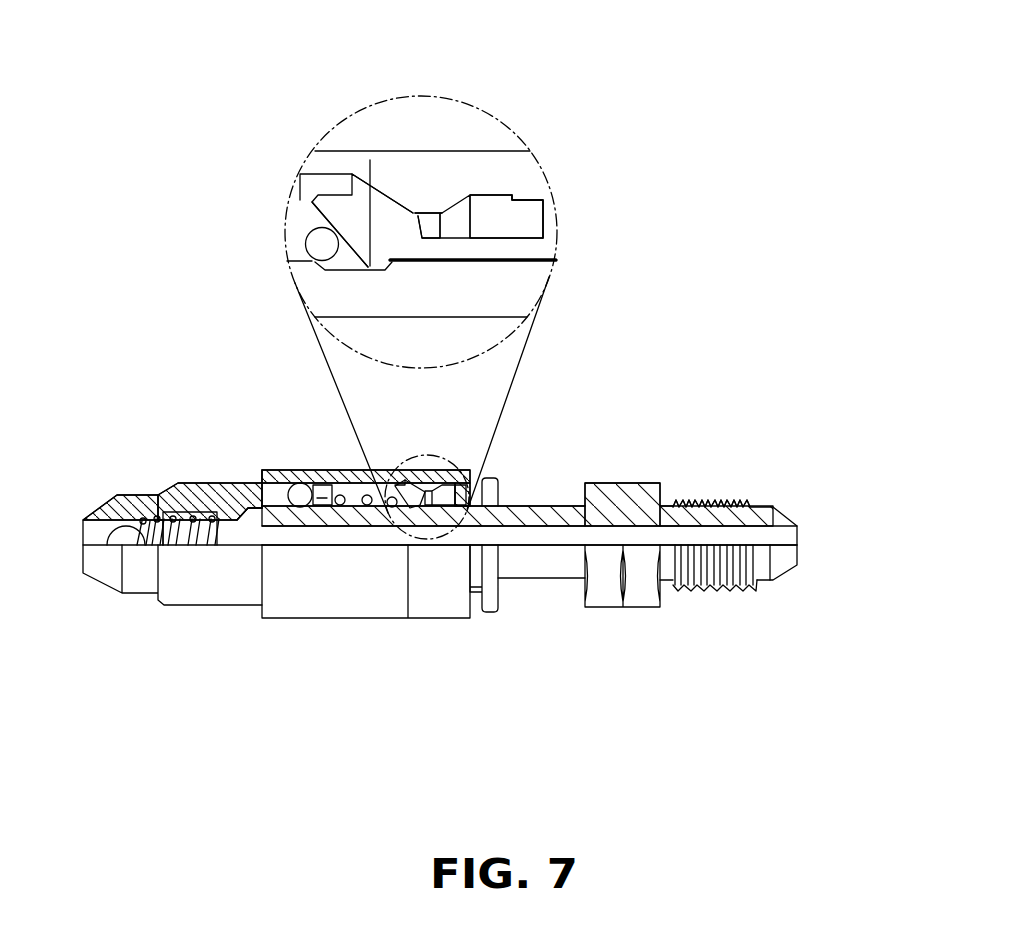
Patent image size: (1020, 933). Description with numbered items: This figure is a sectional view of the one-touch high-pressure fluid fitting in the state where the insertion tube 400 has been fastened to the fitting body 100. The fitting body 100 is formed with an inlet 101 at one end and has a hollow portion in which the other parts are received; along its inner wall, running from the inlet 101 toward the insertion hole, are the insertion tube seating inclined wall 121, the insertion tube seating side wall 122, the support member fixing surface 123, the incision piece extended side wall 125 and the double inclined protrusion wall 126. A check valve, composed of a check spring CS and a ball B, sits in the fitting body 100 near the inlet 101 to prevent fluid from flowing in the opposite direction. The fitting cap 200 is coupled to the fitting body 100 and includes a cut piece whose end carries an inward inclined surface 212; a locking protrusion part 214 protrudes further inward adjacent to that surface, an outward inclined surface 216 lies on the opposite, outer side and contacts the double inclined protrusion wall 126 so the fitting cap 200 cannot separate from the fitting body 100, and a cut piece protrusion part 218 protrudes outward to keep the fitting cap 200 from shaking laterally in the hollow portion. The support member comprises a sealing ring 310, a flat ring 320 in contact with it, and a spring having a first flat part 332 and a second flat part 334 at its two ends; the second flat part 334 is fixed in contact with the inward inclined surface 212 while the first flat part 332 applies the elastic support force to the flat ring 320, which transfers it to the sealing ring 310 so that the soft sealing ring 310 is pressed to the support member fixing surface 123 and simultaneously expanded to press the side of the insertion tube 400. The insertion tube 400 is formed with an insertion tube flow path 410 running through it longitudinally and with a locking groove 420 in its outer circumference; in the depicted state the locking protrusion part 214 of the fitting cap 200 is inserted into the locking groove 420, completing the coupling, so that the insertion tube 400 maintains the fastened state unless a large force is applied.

The fitting body 100 is at (317, 626).
The inlet 101 is at (86, 534).
The ball B is at (130, 528).
The check spring CS is at (178, 526).
The insertion tube seating inclined wall 121 is at (219, 487).
The insertion tube seating side wall 122 is at (249, 507).
The support member fixing surface 123 is at (262, 490).
The incision piece extended side wall 125 is at (316, 176).
The double inclined protrusion wall 126 is at (432, 213).
The fitting cap 200 is at (560, 221).
The inward inclined surface 212 is at (336, 226).
The locking protrusion part 214 is at (370, 160).
The outward inclined surface 216 is at (393, 208).
The cut piece protrusion part 218 is at (540, 203).
The sealing ring 310 is at (300, 512).
The flat ring 320 is at (328, 500).
The first flat part 332 is at (393, 508).
The second flat part 334 is at (320, 242).
The insertion tube 400 is at (782, 588).
The insertion tube flow path 410 is at (766, 535).
The locking groove 420 is at (387, 258).